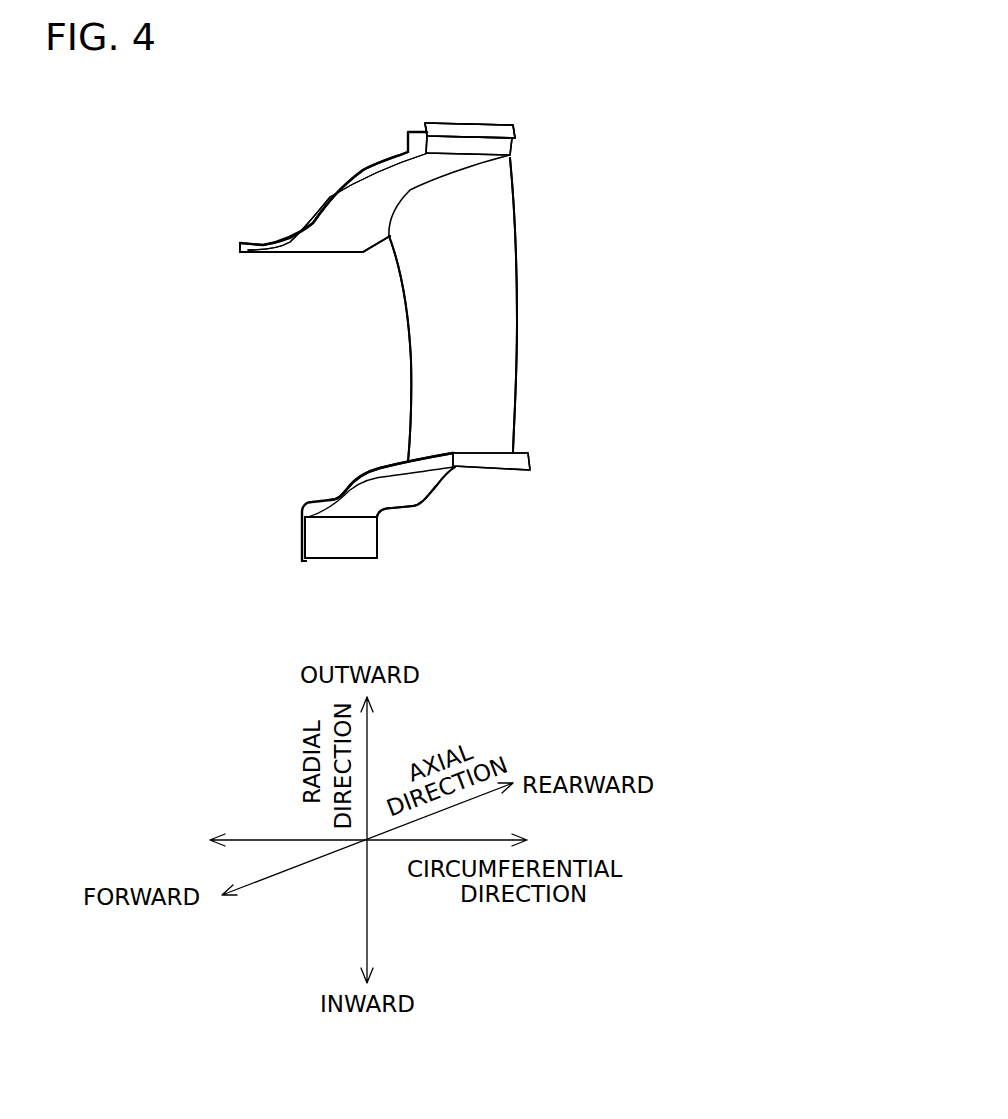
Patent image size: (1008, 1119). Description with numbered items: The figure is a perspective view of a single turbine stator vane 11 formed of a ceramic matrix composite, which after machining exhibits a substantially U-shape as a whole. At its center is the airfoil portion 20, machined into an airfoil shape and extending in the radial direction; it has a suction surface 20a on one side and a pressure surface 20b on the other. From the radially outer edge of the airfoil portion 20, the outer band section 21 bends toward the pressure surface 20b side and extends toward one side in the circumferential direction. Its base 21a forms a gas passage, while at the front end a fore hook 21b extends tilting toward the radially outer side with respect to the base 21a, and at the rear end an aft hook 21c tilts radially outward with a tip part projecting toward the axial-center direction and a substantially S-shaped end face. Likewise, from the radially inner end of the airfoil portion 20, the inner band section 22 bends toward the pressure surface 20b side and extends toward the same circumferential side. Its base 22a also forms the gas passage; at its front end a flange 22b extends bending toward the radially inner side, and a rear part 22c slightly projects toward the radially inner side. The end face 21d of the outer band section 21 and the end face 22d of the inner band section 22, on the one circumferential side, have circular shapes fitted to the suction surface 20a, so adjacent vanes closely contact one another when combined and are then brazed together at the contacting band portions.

The turbine stator vane 11 is at (522, 123).
The airfoil portion 20 is at (512, 377).
The suction surface 20a is at (437, 348).
The pressure surface 20b is at (516, 300).
The outer band section 21 is at (282, 267).
The base of outer band section 21a is at (330, 238).
The fore hook 21b is at (257, 243).
The aft hook 21c is at (466, 130).
The end face of outer band section 21d is at (342, 187).
The inner band section 22 is at (333, 495).
The base of inner band section 22a is at (413, 495).
The flange 22b is at (340, 557).
The rear part 22c is at (498, 463).
The end face of inner band section 22d is at (357, 473).